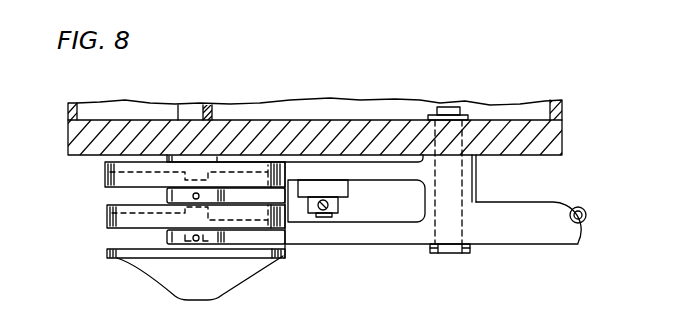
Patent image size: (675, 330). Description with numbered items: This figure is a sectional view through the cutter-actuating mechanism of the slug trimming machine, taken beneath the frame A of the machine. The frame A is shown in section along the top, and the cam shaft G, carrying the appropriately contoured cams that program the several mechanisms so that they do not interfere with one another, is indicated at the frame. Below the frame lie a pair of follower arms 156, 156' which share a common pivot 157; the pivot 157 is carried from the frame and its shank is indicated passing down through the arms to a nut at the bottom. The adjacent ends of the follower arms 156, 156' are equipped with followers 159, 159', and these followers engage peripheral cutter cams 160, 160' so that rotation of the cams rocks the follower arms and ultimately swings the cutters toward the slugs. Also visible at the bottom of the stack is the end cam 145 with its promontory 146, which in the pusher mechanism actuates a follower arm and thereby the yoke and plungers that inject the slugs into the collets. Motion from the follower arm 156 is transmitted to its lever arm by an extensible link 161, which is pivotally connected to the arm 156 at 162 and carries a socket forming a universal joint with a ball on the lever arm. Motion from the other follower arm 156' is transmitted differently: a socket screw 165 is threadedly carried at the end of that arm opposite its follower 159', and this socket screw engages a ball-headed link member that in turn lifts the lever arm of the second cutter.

The frame A is at (66, 116).
The cam shaft G is at (215, 110).
The end cam 145 is at (107, 254).
The promontory 146 is at (170, 272).
The follower arm 156 is at (295, 119).
The follower arm 156' is at (431, 221).
The common pivot 157 is at (447, 254).
The follower 159 is at (170, 174).
The peripheral cutter cam 160 is at (156, 195).
The follower 159' is at (167, 216).
The peripheral cutter cam 160' is at (152, 238).
The extensible link 161 is at (338, 203).
The pivotal connection 162 is at (336, 215).
The socket screw 165 is at (580, 211).